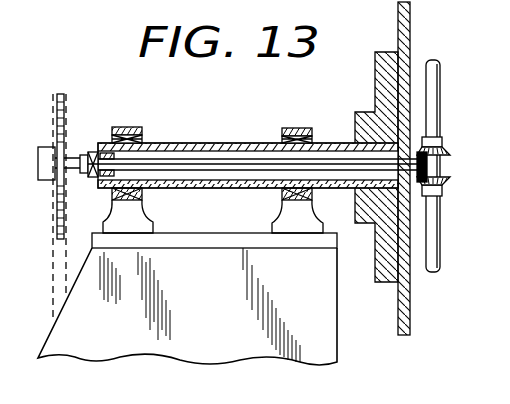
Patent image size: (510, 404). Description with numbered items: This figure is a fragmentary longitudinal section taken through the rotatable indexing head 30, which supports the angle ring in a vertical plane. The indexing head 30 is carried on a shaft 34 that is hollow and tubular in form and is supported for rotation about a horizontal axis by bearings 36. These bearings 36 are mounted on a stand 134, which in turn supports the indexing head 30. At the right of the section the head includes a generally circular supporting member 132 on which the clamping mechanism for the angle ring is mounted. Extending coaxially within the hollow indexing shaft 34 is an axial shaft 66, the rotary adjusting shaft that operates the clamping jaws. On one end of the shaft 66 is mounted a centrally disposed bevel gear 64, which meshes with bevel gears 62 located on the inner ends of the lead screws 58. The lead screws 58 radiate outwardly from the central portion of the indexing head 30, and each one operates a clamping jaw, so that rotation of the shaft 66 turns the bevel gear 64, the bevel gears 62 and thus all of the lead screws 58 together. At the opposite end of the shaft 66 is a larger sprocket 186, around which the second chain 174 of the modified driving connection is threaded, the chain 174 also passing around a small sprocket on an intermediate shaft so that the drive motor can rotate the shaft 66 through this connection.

The indexing head 30 is at (413, 18).
The supporting member 132 is at (406, 37).
The shaft 34 is at (213, 143).
The axial shaft 66 is at (218, 170).
The bearings 36 is at (125, 127).
The stand 134 is at (337, 352).
The sprocket 186 is at (64, 107).
The second chain 174 is at (53, 284).
The lead screw 58 is at (442, 63).
The bevel gears 62 is at (441, 148).
The bevel gear 64 is at (426, 163).